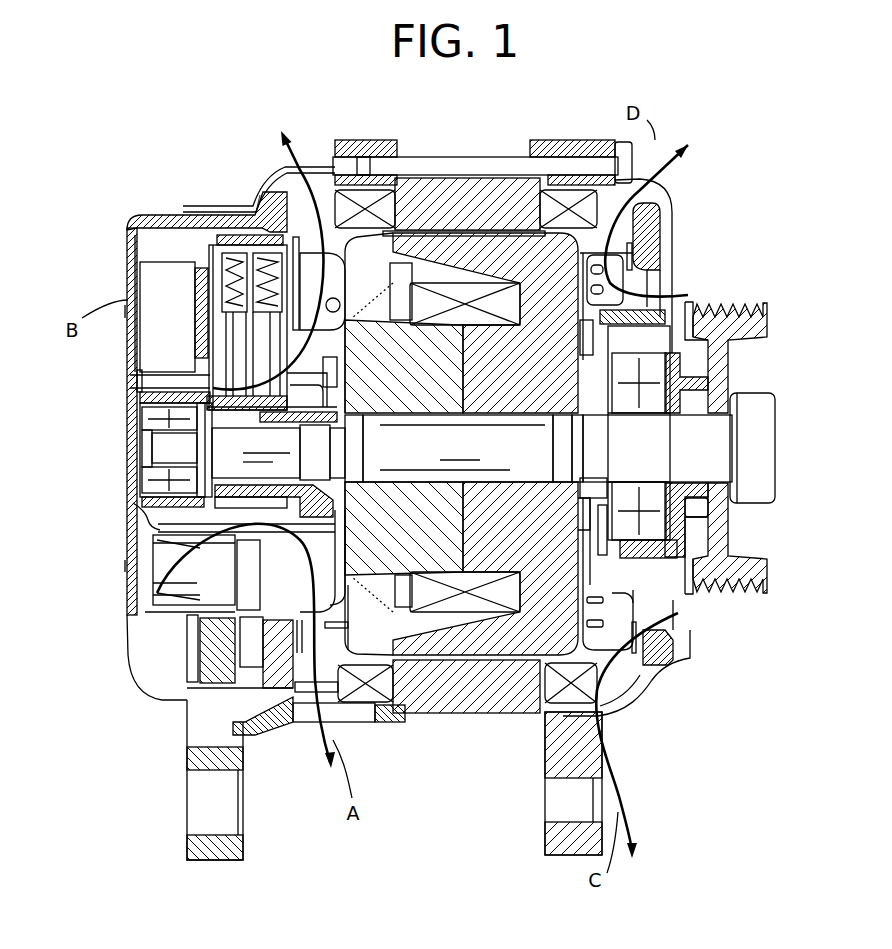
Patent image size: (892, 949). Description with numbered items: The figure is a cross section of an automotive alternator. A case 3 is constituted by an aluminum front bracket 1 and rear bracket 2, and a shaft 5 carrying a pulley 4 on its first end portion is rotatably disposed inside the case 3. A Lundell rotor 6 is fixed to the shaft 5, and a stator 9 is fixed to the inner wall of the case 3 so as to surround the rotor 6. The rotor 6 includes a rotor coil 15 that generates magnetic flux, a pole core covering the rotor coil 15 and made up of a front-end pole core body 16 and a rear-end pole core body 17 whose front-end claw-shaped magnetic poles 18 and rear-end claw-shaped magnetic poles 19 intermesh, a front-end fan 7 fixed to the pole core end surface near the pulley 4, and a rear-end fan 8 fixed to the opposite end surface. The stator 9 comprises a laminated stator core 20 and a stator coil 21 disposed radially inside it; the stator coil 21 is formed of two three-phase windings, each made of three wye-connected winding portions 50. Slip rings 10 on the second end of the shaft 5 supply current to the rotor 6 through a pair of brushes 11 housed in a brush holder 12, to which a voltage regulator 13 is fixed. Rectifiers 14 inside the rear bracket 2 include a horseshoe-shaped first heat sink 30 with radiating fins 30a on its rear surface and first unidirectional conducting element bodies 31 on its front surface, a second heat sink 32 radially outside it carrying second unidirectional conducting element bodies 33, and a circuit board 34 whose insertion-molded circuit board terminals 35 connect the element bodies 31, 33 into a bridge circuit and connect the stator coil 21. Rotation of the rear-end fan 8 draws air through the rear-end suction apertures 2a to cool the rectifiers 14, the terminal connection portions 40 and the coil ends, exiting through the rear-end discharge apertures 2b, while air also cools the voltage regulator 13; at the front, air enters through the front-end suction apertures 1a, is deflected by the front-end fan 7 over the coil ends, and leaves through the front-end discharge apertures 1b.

The front bracket 1 is at (667, 647).
The front-end suction apertures 1a is at (660, 277).
The front-end discharge apertures 1b is at (657, 210).
The rear bracket 2 is at (255, 727).
The rear-end suction apertures 2a is at (127, 313).
The rear-end discharge apertures 2b is at (300, 137).
The case 3 is at (673, 672).
The pulley 4 is at (765, 302).
The shaft 5 is at (716, 418).
The Lundell rotor 6 is at (590, 580).
The front-end fan 7 is at (662, 680).
The rear-end fan 8 is at (332, 603).
The stator 9 is at (450, 697).
The slip rings 10 is at (195, 485).
The brushes 11 is at (233, 330).
The brush holder 12 is at (237, 236).
The voltage regulator 13 is at (200, 280).
The rectifiers 14 is at (190, 620).
The rotor coil 15 is at (533, 703).
The front-end pole core body 16 is at (502, 717).
The rear-end pole core body 17 is at (423, 703).
The front-end claw-shaped magnetic poles 18 is at (450, 700).
The rear-end claw-shaped magnetic poles 19 is at (640, 693).
The stator core 20 is at (473, 198).
The stator coil 21 is at (567, 160).
The first heat sink 30 is at (195, 583).
The radiating fins 30a is at (140, 548).
The first unidirectional conducting element bodies 31 is at (200, 607).
The second heat sink 32 is at (235, 640).
The second unidirectional conducting element bodies 33 is at (170, 660).
The circuit board 34 is at (263, 700).
The circuit board terminals 35 is at (197, 590).
The terminal connection portions 40 is at (385, 715).
The winding portions 50 is at (292, 717).